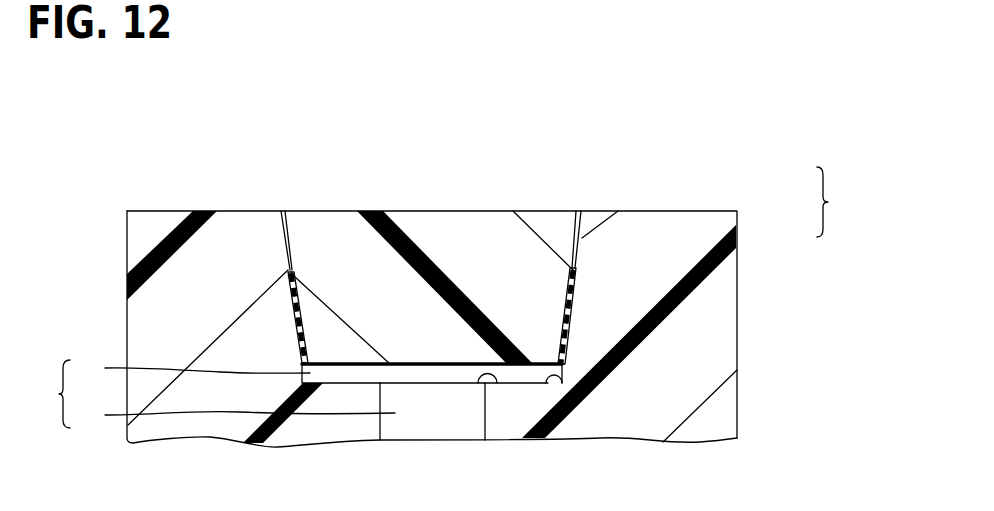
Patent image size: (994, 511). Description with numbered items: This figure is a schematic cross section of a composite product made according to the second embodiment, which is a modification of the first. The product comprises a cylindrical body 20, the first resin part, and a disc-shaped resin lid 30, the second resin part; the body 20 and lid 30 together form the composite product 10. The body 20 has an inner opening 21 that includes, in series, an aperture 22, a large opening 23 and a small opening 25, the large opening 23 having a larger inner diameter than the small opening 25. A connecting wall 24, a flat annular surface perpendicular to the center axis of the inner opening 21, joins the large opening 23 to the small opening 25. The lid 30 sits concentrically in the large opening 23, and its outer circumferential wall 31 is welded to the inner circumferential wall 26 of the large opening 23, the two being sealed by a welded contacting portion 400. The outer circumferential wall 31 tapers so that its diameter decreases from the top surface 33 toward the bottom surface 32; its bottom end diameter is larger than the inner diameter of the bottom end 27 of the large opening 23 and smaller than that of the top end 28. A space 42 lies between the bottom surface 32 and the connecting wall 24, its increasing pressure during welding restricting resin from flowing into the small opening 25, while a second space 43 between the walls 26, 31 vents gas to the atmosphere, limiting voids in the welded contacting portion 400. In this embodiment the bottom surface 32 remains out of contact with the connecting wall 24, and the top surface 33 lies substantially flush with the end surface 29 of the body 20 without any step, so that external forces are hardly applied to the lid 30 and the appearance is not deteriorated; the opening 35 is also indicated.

The substrate assembly 10 is at (834, 202).
The body 20 is at (748, 220).
The inner opening 21 is at (51, 394).
The aperture 22 is at (582, 210).
The large opening 23 is at (191, 371).
The connecting wall 24 is at (478, 383).
The small opening 25 is at (234, 411).
The inner circumferential wall 26 is at (577, 221).
The bottom end 27 is at (546, 383).
The top end 28 is at (281, 207).
The end surface 29 is at (171, 211).
The lid 30 is at (593, 229).
The outer circumferential wall 31 is at (577, 242).
The bottom surface 32 is at (437, 365).
The top surface 33 is at (419, 211).
The opening 35 is at (285, 208).
The space 42 is at (515, 368).
The second space 43 is at (279, 227).
The welded contacting portion 400 is at (566, 321).